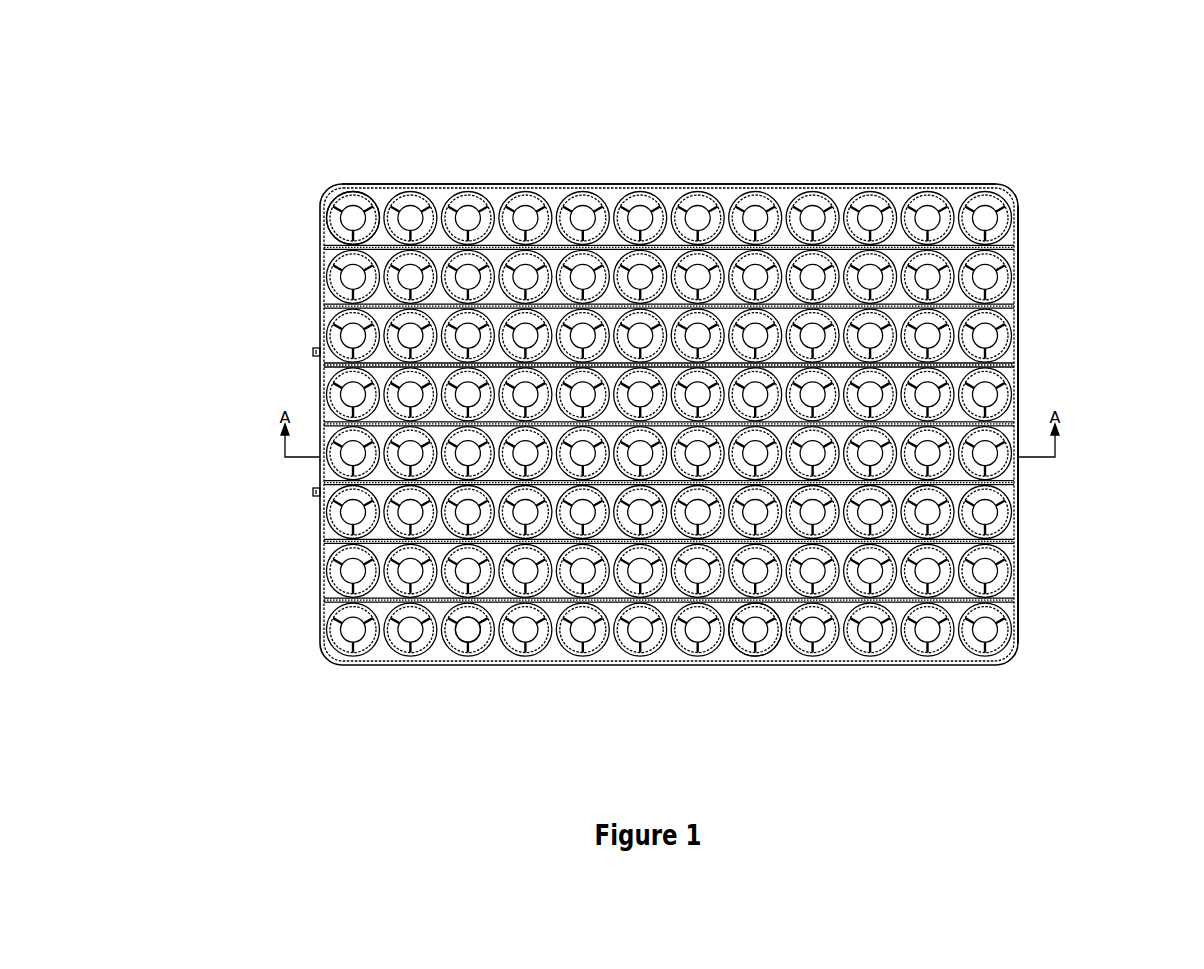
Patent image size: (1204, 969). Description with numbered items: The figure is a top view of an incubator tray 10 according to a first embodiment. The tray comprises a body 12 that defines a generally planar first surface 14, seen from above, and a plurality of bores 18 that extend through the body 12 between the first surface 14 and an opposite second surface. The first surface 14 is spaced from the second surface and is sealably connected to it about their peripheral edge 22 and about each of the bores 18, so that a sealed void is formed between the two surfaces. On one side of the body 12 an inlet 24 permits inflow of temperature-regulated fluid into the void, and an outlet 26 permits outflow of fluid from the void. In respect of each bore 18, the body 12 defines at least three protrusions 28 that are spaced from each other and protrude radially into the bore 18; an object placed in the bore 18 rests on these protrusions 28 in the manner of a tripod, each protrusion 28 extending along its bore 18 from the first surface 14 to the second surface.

The incubator tray 10 is at (437, 162).
The body 12 is at (1018, 292).
The first surface 14 is at (785, 648).
The bores 18 is at (468, 630).
The peripheral edge 22 is at (688, 184).
The inlet 24 is at (312, 352).
The outlet 26 is at (312, 492).
The protrusions 28 is at (340, 213).